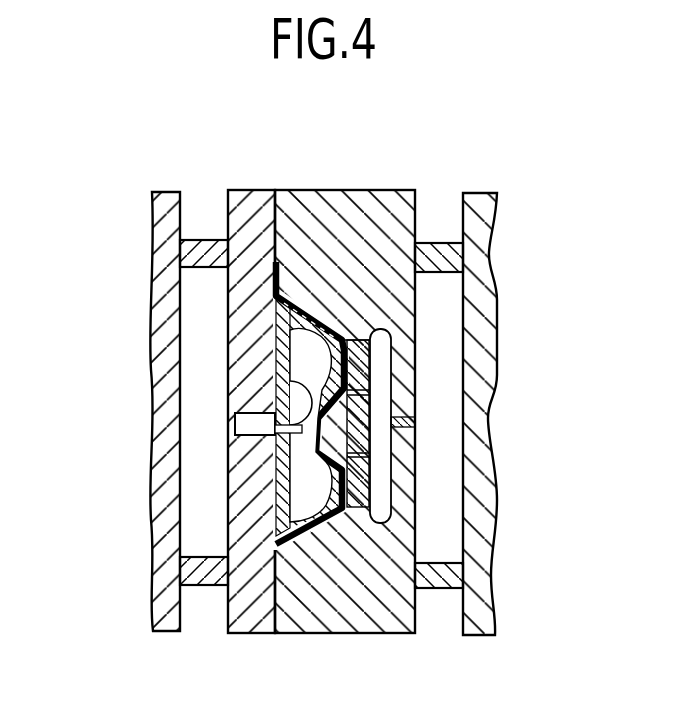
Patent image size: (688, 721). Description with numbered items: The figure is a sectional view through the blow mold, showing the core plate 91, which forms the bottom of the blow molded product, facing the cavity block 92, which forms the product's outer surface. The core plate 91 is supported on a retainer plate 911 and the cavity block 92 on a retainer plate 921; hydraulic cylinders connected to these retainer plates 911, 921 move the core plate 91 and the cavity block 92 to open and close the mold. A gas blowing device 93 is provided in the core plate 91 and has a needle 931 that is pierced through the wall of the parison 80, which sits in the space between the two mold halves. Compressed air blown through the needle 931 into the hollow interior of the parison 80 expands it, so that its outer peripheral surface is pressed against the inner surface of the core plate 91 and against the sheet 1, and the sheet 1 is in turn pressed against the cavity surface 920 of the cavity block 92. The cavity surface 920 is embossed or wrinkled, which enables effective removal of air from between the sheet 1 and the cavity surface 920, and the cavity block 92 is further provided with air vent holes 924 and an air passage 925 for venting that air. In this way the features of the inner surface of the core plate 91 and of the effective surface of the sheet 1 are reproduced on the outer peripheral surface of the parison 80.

The sheet 1 is at (293, 262).
The parison 80 is at (290, 490).
The core plate 91 is at (250, 230).
The cavity block 92 is at (383, 217).
The gas blowing device 93 is at (235, 420).
The retainer plate 911 is at (158, 291).
The retainer plate 921 is at (480, 279).
The needle 931 is at (290, 372).
The cavity surface 920 is at (382, 484).
The air vent holes 924 is at (358, 410).
The air passage 925 is at (380, 452).